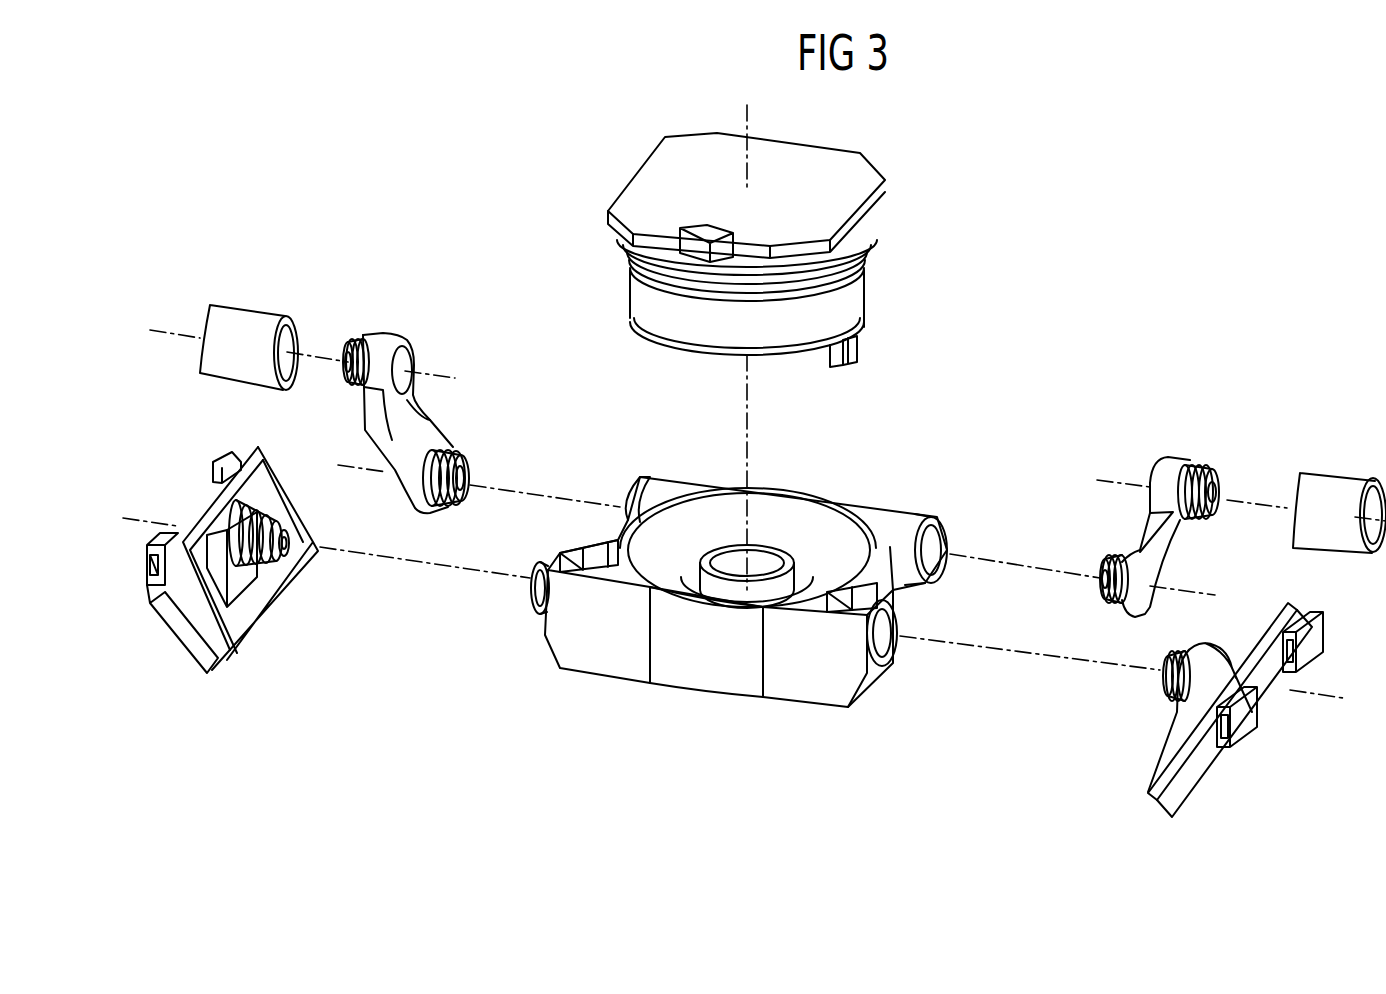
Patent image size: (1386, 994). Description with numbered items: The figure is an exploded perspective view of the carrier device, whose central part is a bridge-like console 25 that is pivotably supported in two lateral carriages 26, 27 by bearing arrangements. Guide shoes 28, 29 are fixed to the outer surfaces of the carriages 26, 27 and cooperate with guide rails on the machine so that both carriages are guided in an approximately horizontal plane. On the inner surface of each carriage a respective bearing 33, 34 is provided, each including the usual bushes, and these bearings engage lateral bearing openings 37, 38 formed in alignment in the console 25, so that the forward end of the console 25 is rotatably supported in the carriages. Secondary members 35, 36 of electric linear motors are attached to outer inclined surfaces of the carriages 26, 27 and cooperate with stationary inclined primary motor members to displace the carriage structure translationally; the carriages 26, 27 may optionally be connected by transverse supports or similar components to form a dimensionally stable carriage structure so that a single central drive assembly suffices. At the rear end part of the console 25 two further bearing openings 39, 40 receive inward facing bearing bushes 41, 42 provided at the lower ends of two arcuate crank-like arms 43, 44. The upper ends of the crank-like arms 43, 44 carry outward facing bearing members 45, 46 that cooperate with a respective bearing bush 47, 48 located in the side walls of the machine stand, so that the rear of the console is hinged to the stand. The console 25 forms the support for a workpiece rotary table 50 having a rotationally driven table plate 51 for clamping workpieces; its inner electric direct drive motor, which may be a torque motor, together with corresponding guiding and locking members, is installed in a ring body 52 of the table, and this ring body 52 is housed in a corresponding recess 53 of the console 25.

The console 25 is at (738, 700).
The carriage 26 is at (180, 616).
The carriage 27 is at (1178, 757).
The guide shoe 28 is at (222, 458).
The guide shoe 29 is at (1317, 648).
The bearing 33 is at (295, 565).
The bearing 34 is at (1165, 690).
The secondary member 35 is at (190, 655).
The secondary member 36 is at (1210, 773).
The lateral bearing opening 37 is at (530, 590).
The lateral bearing opening 38 is at (895, 645).
The bearing opening 39 is at (625, 490).
The bearing opening 40 is at (940, 568).
The bearing bush 41 is at (458, 460).
The bearing bush 42 is at (1100, 595).
The crank-like arm 43 is at (372, 422).
The crank-like arm 44 is at (1165, 562).
The bearing member 45 is at (355, 342).
The bearing member 46 is at (1200, 470).
The bearing bush 47 is at (245, 308).
The bearing bush 48 is at (1345, 470).
The workpiece rotary table 50 is at (913, 190).
The table plate 51 is at (816, 204).
The ring body 52 is at (870, 294).
The recess 53 is at (790, 512).